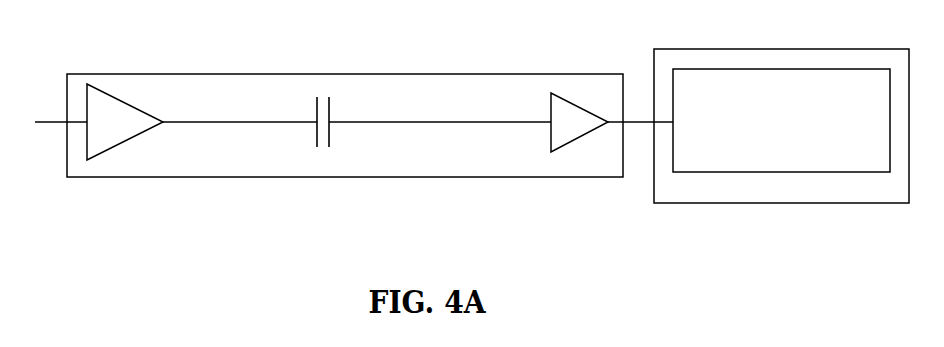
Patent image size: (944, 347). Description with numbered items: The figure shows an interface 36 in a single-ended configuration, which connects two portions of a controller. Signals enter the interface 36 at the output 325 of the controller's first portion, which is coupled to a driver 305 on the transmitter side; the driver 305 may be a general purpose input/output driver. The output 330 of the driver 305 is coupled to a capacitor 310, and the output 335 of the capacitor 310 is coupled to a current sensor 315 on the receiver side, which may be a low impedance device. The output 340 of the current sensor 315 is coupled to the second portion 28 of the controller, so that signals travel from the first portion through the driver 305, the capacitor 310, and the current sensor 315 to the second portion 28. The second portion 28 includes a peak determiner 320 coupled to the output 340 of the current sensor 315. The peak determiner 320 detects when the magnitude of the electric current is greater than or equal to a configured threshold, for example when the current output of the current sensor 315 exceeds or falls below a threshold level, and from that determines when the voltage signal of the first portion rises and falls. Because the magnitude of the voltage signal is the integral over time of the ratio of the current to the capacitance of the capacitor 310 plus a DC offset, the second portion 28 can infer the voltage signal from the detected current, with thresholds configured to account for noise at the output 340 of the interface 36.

The interface 36 is at (182, 73).
The output of first portion of controller 325 is at (42, 130).
The driver 305 is at (119, 143).
The output of driver 330 is at (220, 130).
The capacitor 310 is at (323, 152).
The output of capacitor 335 is at (450, 133).
The current sensor 315 is at (565, 155).
The output of current sensor 340 is at (636, 133).
The second portion of controller 28 is at (833, 205).
The peak determiner 320 is at (744, 173).